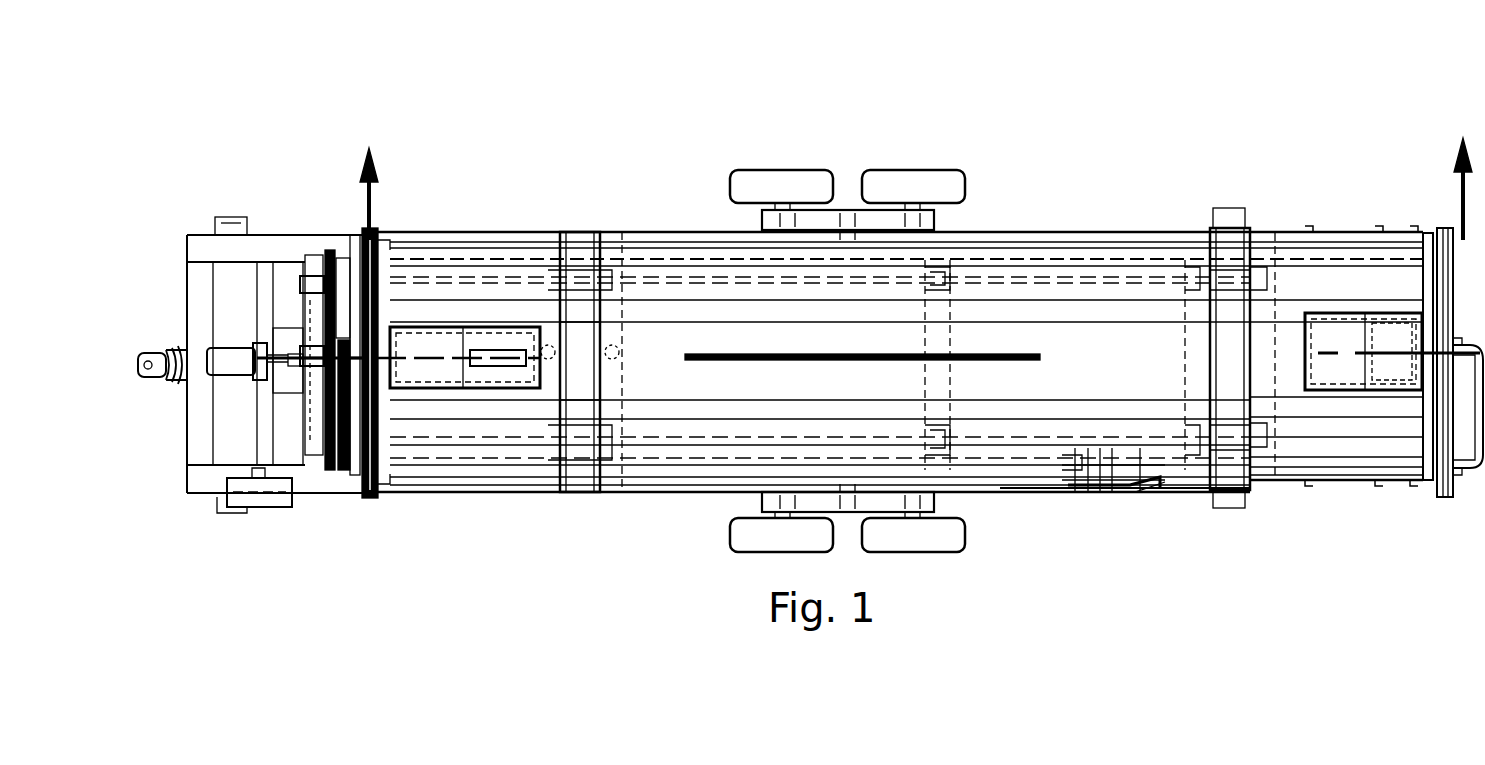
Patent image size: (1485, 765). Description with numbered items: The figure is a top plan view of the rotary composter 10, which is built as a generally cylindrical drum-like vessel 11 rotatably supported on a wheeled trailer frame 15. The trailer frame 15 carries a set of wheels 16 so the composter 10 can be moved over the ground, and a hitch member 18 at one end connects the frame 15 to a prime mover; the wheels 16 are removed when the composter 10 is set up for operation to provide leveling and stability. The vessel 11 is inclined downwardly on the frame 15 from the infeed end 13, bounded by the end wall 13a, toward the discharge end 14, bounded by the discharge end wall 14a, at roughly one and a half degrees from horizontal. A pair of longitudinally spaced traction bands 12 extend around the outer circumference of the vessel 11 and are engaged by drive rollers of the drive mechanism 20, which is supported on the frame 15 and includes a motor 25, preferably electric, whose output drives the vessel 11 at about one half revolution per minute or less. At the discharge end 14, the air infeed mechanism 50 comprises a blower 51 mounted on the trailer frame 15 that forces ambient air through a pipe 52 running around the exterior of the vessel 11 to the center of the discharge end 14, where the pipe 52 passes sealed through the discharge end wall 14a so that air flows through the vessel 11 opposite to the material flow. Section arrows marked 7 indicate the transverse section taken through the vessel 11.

The rotary composter 10 is at (420, 100).
The vessel 11 is at (445, 250).
The traction bands 12 is at (575, 235).
The infeed end 13 is at (392, 497).
The end wall 13a is at (385, 240).
The discharge end 14 is at (1357, 487).
The discharge end wall 14a is at (1440, 232).
The trailer frame 15 is at (1023, 492).
The wheels 16 is at (805, 172).
The hitch member 18 is at (160, 350).
The drive mechanism 20 is at (311, 497).
The motor 25 is at (232, 378).
The air infeed mechanism 50 is at (1457, 507).
The blower 51 is at (1100, 492).
The pipe 52 is at (1484, 165).
The section line 7- 7 is at (916, 189).